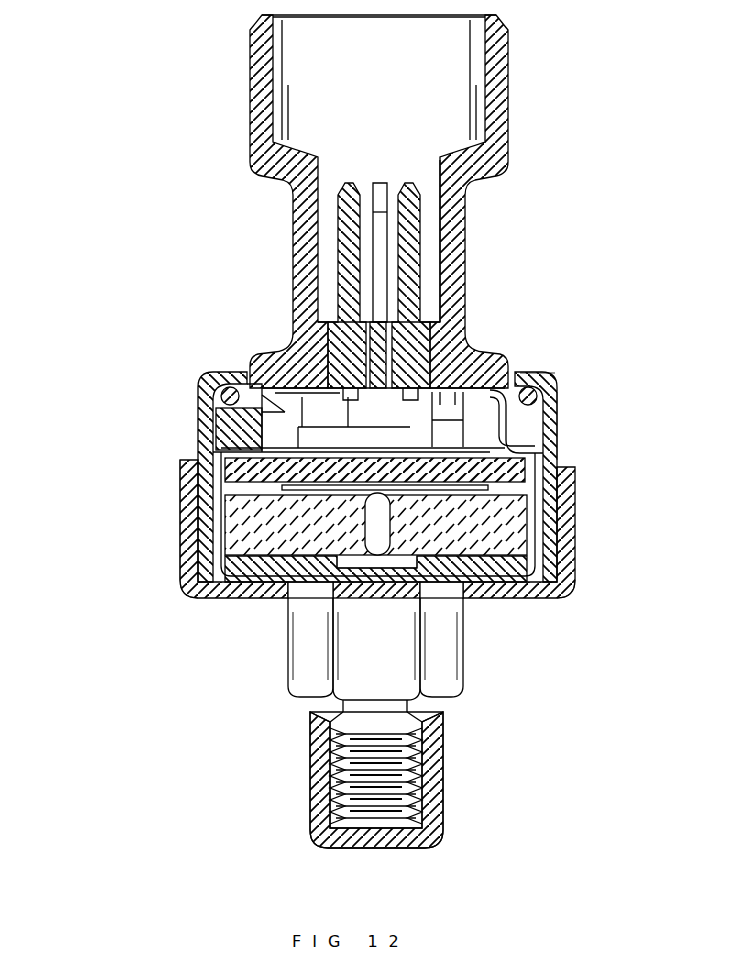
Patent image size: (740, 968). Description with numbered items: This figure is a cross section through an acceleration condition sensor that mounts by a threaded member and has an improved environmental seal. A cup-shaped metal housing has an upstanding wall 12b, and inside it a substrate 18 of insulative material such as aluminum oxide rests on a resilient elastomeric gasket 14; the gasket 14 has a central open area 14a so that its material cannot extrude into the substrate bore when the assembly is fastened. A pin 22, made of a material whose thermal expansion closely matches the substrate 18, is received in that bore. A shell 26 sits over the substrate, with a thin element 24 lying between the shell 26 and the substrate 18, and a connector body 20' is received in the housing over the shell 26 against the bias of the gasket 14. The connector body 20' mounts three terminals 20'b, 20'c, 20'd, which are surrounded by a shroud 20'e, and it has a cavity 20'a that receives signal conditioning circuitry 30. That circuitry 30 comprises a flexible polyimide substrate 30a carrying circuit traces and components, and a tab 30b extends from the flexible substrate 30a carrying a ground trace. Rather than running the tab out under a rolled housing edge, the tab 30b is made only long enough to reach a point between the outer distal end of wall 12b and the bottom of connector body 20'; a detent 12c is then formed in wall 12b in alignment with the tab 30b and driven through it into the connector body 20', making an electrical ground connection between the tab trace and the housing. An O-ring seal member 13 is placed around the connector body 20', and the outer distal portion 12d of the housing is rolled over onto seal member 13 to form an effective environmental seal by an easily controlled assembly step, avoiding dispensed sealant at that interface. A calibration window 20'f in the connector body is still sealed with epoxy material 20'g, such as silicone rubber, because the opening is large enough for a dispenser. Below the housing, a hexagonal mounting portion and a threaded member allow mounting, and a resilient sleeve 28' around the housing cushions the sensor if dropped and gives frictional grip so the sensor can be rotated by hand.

The upstanding wall 12b is at (548, 512).
The detent 12c is at (557, 432).
The outer distal portion 12d is at (553, 388).
The O-ring seal member 13 is at (538, 378).
The gasket 14 is at (256, 563).
The central open area 14a is at (405, 581).
The substrate 18 is at (496, 531).
The connector body 20' is at (396, 204).
The cavity 20'a is at (211, 408).
The terminal 20'b is at (308, 285).
The terminal 20'c is at (298, 285).
The terminal 20'd is at (457, 285).
The shroud 20'e is at (481, 241).
The calibration window 20'f is at (211, 394).
The epoxy material 20'g is at (197, 429).
The pin 22 is at (378, 541).
The contact strip 24 is at (490, 488).
The shell 26 is at (226, 478).
The sleeve 28' is at (593, 623).
The signal conditioning circuitry 30 is at (300, 409).
The flexible substrate 30a is at (426, 419).
The tab 30b is at (540, 462).